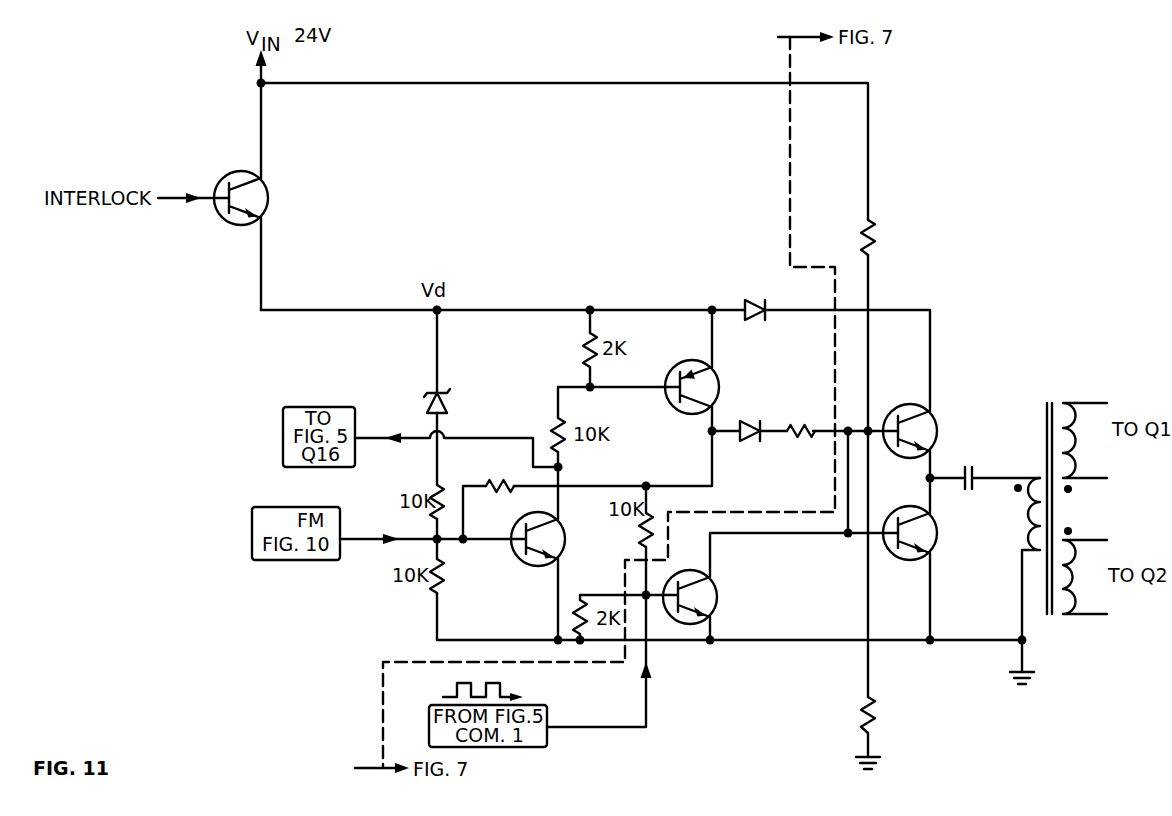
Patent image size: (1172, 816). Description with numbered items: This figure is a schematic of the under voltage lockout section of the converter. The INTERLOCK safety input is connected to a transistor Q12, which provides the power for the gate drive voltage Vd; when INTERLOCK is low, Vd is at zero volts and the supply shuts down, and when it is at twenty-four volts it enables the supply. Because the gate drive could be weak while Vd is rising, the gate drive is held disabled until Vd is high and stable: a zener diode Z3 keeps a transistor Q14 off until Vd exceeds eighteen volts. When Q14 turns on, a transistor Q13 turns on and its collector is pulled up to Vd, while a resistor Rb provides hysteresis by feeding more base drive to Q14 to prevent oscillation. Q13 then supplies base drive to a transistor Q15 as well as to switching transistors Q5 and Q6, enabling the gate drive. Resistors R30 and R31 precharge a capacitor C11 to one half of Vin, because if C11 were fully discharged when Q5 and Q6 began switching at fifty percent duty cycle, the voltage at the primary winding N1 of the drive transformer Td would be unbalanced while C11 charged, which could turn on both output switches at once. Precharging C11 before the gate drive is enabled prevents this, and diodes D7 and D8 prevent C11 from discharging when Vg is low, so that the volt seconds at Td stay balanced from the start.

The transistor Q12 is at (265, 196).
The transistor Q13 is at (716, 362).
The transistor Q14 is at (563, 576).
The transistor Q15 is at (755, 586).
The transistor Q5 is at (928, 441).
The transistor Q6 is at (928, 559).
The zener diode Z3 is at (447, 393).
The diode D8 is at (759, 295).
The diode D7 is at (751, 418).
The resistor R30 is at (889, 232).
The resistor R31 is at (889, 709).
The resistor Rb is at (500, 485).
The capacitor C11 is at (985, 469).
The primary winding N1 is at (1019, 559).
The drive transformer Td is at (1070, 490).